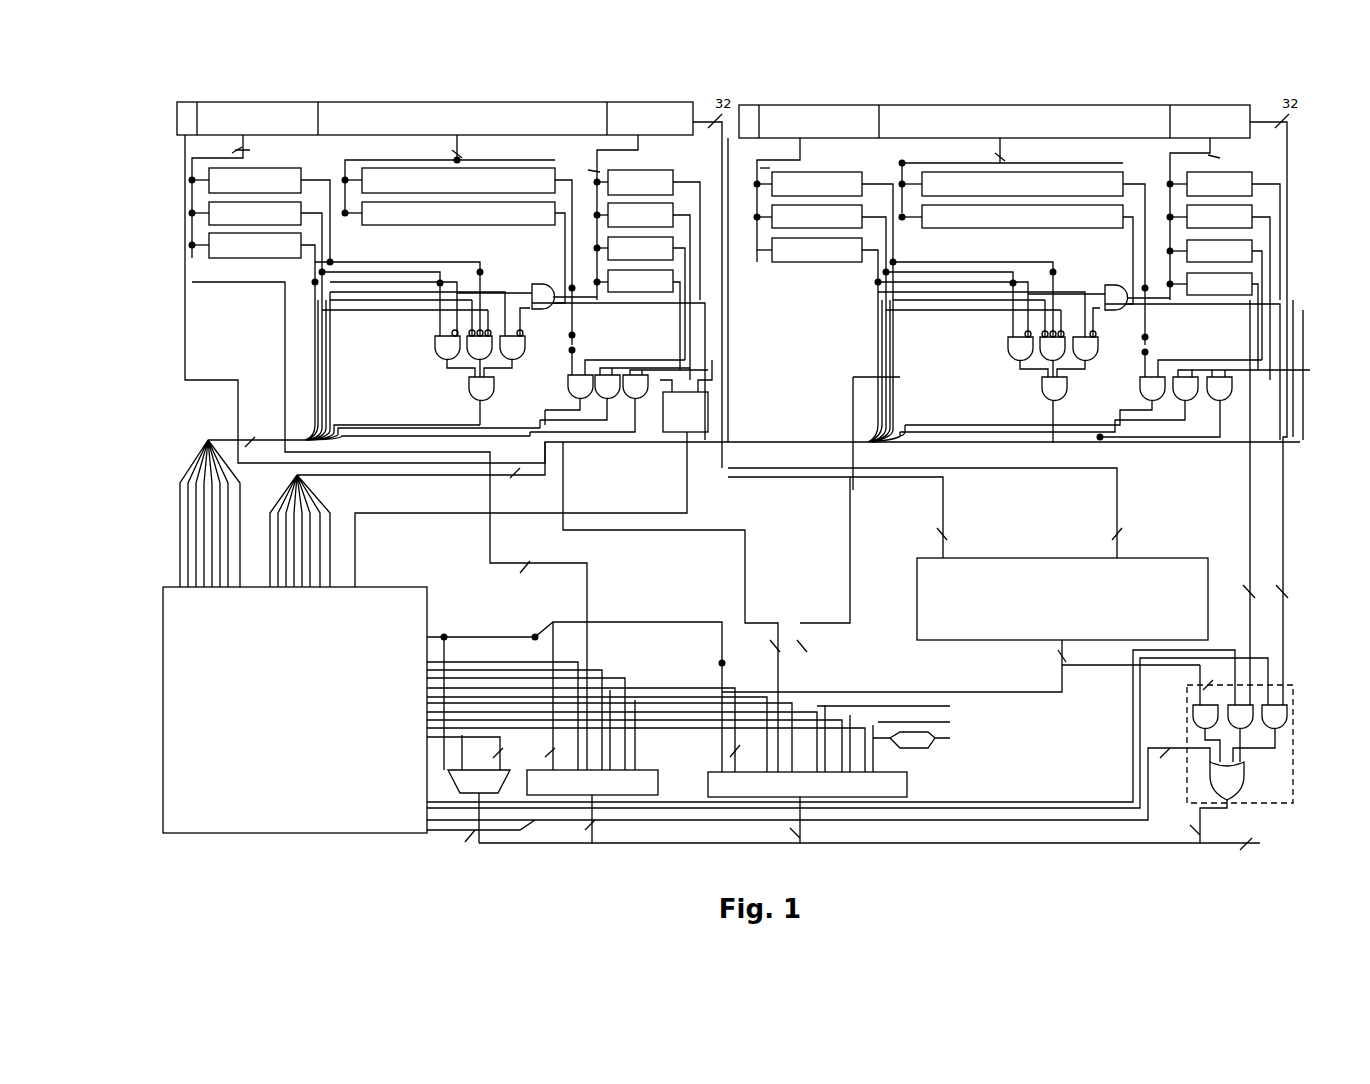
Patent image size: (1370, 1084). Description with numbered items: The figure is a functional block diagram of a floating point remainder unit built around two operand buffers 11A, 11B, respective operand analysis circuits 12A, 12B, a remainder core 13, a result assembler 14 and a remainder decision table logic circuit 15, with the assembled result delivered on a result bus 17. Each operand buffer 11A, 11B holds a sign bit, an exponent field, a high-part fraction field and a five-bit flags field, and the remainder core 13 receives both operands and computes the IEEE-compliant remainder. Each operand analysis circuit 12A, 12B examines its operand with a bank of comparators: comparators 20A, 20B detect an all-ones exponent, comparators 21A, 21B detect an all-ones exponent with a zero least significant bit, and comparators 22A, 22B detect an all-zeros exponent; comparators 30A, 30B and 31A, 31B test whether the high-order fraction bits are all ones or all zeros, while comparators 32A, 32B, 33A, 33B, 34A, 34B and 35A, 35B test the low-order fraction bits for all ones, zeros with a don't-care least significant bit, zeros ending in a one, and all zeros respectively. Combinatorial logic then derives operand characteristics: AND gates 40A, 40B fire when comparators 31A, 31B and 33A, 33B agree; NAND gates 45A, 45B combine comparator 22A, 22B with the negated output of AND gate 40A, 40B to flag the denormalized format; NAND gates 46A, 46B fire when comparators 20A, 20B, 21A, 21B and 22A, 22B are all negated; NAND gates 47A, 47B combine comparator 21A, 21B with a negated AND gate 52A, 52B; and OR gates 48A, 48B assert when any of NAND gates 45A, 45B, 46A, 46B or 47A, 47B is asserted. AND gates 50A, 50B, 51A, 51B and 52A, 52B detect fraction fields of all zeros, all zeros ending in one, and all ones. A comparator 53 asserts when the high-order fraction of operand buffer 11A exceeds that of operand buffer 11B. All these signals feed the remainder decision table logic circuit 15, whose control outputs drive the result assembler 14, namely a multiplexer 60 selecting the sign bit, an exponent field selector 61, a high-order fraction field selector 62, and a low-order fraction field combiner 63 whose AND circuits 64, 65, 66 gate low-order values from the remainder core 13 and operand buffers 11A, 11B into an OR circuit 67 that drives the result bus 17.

The operand buffer 11A is at (435, 108).
The operand buffer 11B is at (994, 111).
The operand analysis circuit 12A is at (258, 340).
The operand analysis circuit 12B is at (818, 357).
The remainder core 13 is at (965, 625).
The result assembler 14 is at (1288, 640).
The remainder decision table logic circuit 15 is at (715, 710).
The result bus 17 is at (968, 845).
The comparator 20A is at (252, 168).
The comparator 21A is at (209, 210).
The comparator 22A is at (209, 243).
The comparator 30A is at (440, 168).
The comparator 31A is at (438, 225).
The comparator 32A is at (668, 172).
The comparator 33A is at (670, 205).
The comparator 34A is at (608, 244).
The comparator 35A is at (608, 275).
The AND gate 40A is at (540, 290).
The NAND gate 45A is at (435, 348).
The NAND gate 46A is at (470, 356).
The NAND gate 47A is at (510, 336).
The OR gate 48A is at (470, 388).
The AND gate 50A is at (585, 375).
The AND gate 51A is at (606, 398).
The AND gate 52A is at (633, 375).
The comparator 20B is at (815, 172).
The comparator 21B is at (852, 210).
The comparator 22B is at (815, 262).
The comparator 30B is at (1055, 172).
The comparator 31B is at (1055, 228).
The comparator 32B is at (1245, 172).
The comparator 33B is at (1252, 214).
The comparator 34B is at (1252, 247).
The comparator 35B is at (1252, 280).
The AND gate 40B is at (1113, 290).
The NAND gate 45B is at (1008, 350).
The NAND gate 46B is at (1043, 358).
The NAND gate 47B is at (1093, 361).
The OR gate 48B is at (1043, 391).
The AND gate 50B is at (1150, 398).
The AND gate 51B is at (1183, 400).
The AND gate 52B is at (1225, 398).
The comparator 53 is at (660, 442).
The multiplexer 60 is at (460, 782).
The exponent field selector 61 is at (592, 794).
The high-order fraction field selector 62 is at (807, 660).
The low-order fraction field combiner 63 is at (1293, 765).
The AND circuit 64 is at (1200, 705).
The AND circuit 65 is at (1245, 705).
The AND circuit 66 is at (1280, 705).
The OR circuit 67 is at (1227, 781).